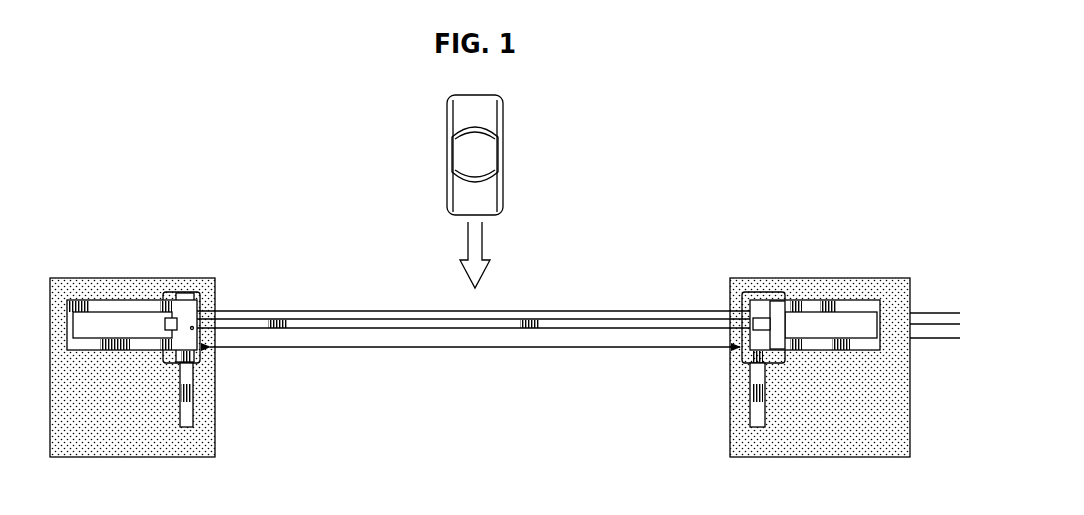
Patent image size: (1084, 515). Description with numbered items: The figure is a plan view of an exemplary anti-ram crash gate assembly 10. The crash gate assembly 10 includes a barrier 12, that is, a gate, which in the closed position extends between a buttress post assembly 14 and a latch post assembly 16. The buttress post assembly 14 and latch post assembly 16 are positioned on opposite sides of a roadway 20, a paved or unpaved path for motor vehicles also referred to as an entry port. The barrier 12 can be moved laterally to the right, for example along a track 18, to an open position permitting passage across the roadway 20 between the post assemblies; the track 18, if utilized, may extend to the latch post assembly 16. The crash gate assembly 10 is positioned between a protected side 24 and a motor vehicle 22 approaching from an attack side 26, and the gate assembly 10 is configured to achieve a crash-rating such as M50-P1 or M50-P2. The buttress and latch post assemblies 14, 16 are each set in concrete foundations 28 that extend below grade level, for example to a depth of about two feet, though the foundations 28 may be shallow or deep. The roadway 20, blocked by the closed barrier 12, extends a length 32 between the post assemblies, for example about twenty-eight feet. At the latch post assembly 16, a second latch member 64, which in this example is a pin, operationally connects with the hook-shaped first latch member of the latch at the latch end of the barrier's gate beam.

The anti-ram crash gate assembly 10 is at (744, 180).
The barrier 12 is at (572, 310).
The buttress post assembly 14 is at (784, 264).
The latch post assembly 16 is at (163, 267).
The track 18 is at (936, 312).
The roadway 20 is at (384, 292).
The motor vehicle 22 is at (462, 167).
The protected side 24 is at (585, 427).
The attack side 26 is at (587, 174).
The concrete foundation 28 is at (118, 422).
The length 32 is at (455, 348).
The second latch member 64 is at (188, 320).